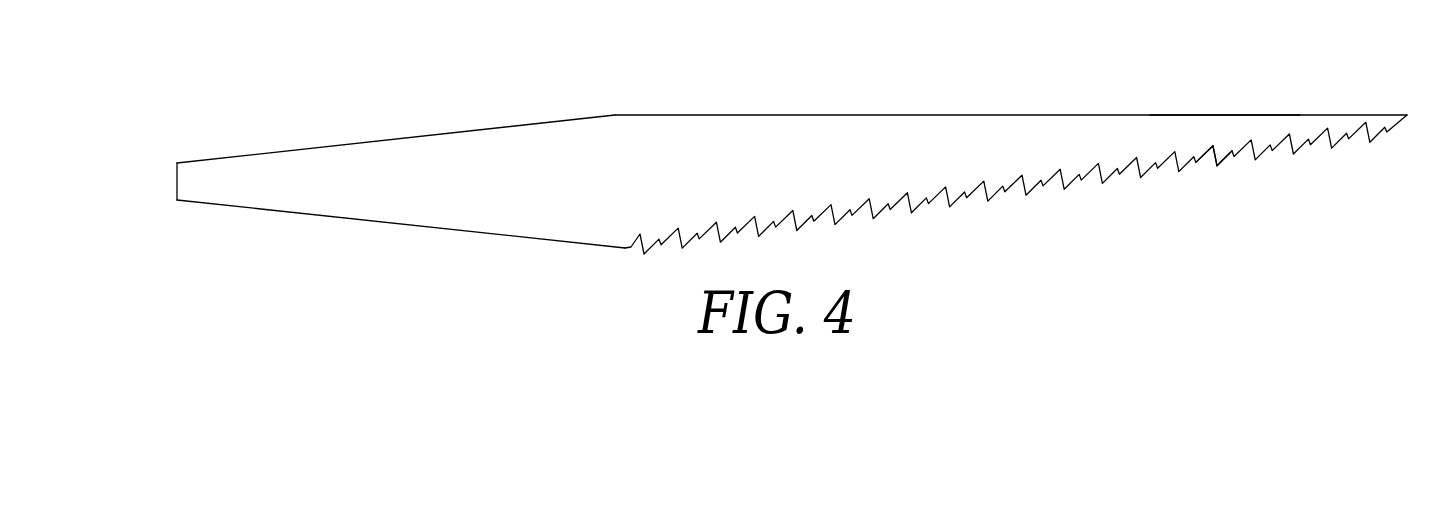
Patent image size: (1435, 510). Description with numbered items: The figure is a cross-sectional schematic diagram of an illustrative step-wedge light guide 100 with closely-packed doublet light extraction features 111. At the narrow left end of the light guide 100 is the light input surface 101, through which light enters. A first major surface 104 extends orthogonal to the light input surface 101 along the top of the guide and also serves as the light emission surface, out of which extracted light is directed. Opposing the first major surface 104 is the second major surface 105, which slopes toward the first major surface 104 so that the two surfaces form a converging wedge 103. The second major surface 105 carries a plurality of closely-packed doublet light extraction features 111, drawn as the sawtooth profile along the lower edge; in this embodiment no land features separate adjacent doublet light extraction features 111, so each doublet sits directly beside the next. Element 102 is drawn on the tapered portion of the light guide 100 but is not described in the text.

The step-wedge light guide 100 is at (684, 61).
The light input surface 101 is at (177, 180).
The tapered body portion 102 is at (430, 152).
The converging wedge 103 is at (995, 140).
The first major surface 104 is at (1219, 100).
The second major surface 105 is at (1216, 184).
The doublet light extraction features 111 is at (1020, 188).